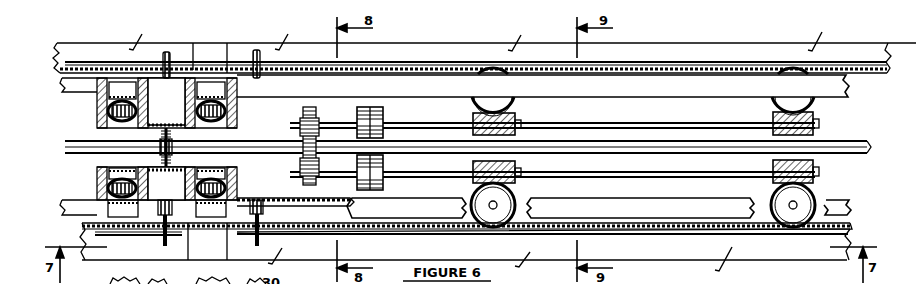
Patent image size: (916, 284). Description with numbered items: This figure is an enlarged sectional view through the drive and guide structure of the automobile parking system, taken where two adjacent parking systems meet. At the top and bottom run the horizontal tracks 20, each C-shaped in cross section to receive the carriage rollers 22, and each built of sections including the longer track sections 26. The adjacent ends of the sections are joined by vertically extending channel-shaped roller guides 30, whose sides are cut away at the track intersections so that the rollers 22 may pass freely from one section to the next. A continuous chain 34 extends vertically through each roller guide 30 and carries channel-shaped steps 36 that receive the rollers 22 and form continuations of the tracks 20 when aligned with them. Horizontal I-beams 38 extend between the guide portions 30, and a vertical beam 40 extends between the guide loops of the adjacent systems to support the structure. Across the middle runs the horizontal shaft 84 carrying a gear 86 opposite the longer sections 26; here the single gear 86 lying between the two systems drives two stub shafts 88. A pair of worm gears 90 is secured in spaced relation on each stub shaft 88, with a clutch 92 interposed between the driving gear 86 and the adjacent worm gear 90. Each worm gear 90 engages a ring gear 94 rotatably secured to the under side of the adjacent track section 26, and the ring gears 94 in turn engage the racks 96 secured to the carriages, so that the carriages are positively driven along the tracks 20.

The track 20 is at (846, 90).
The roller 22 is at (259, 208).
The long track section 26 is at (588, 88).
The roller guide 30 is at (100, 98).
The chain 34 is at (106, 182).
The step 36 is at (207, 90).
The I-beam 38 is at (171, 283).
The vertical beam 40 is at (157, 166).
The horizontal shaft 84 is at (86, 143).
The gear 86 is at (300, 141).
The stub shaft 88 is at (584, 124).
The worm gear 90 is at (513, 118).
The clutch 92 is at (385, 122).
The ring gear 94 is at (479, 101).
The rack 96 is at (161, 232).